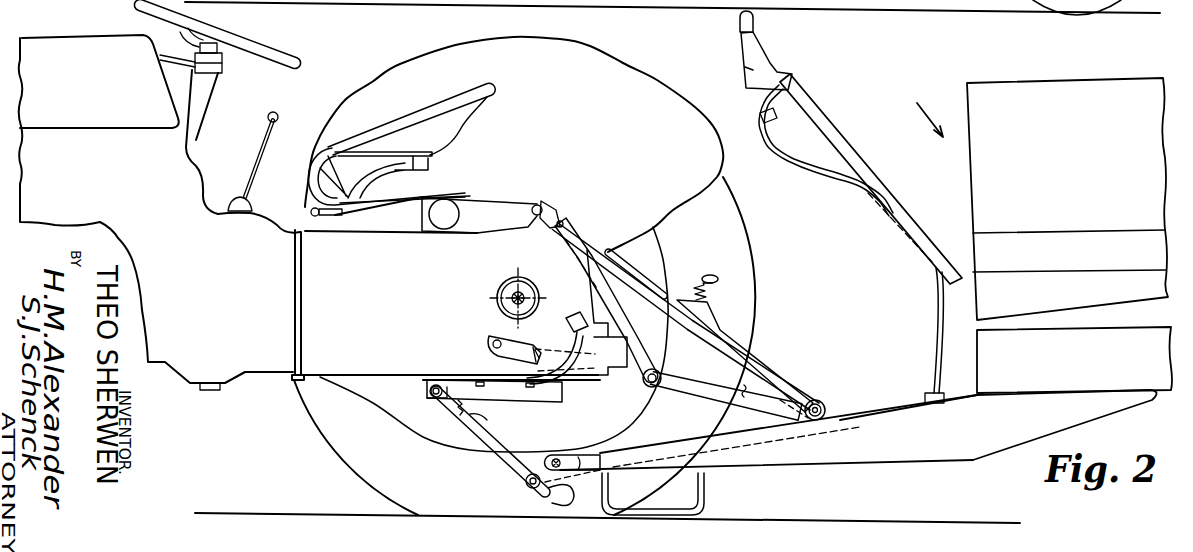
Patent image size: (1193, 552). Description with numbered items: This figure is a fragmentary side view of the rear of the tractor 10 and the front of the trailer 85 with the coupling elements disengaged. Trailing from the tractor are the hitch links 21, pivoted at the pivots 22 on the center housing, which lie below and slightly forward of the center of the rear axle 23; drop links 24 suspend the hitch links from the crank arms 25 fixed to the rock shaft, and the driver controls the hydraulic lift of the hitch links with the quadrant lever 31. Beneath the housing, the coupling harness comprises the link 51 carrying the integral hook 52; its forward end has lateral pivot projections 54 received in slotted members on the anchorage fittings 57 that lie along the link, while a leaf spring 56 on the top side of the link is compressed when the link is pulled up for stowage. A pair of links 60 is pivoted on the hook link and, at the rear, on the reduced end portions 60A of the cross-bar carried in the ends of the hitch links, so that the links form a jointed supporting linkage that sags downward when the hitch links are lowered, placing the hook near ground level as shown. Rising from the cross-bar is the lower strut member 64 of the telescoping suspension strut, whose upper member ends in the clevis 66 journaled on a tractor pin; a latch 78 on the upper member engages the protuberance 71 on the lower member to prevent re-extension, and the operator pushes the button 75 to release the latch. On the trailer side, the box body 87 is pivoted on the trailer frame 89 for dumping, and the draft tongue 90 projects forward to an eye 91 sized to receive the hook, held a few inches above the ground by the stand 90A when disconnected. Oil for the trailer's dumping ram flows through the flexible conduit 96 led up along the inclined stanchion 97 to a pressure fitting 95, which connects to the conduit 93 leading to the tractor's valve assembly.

The tractor 10 is at (261, 403).
The hitch links 21 is at (680, 377).
The pivots 22 is at (490, 340).
The rear axle 23 is at (522, 293).
The drop links 24 is at (616, 312).
The crank arms 25 is at (498, 200).
The quadrant lever 31 is at (335, 218).
The link 51 is at (500, 450).
The hook 52 is at (542, 506).
The lateral pivot projections 54 is at (437, 399).
The leaf spring 56 is at (488, 419).
The anchorage fittings 57 is at (522, 396).
The links 60 is at (678, 438).
The reduced end portions 60A is at (827, 407).
The lower strut member 64 is at (788, 384).
The clevis 66 is at (582, 235).
The protuberance 71 is at (715, 315).
The button 75 is at (710, 278).
The latch 78 is at (616, 251).
The trailer 85 is at (920, 111).
The box body 87 is at (1041, 82).
The trailer frame 89 is at (1063, 385).
The draft tongue 90 is at (860, 452).
The stand 90A is at (707, 492).
The eye 91 is at (588, 460).
The conduit 93 is at (527, 376).
The pressure fitting 95 is at (568, 314).
The flexible conduit 96 is at (817, 174).
The stanchion 97 is at (842, 128).